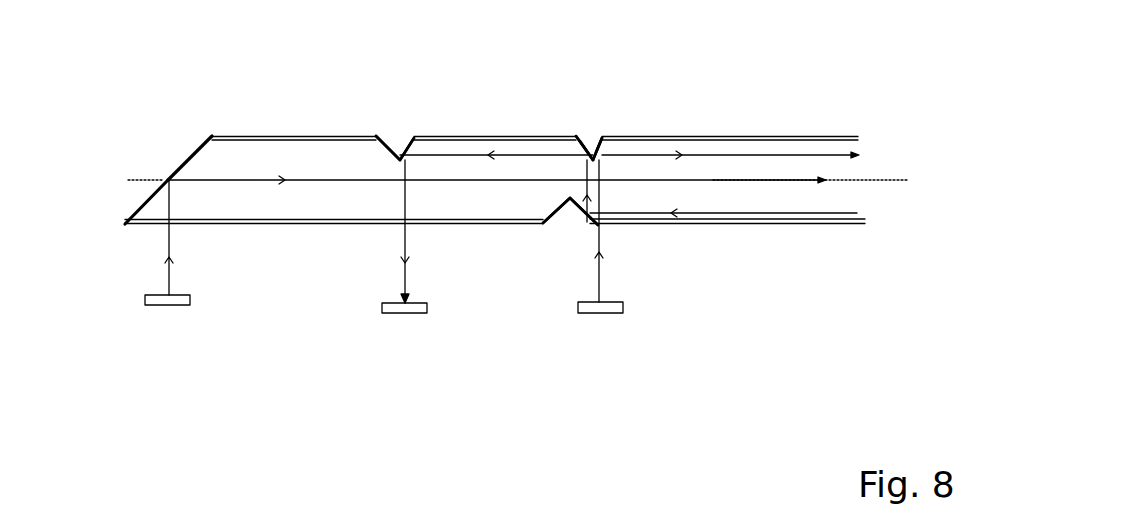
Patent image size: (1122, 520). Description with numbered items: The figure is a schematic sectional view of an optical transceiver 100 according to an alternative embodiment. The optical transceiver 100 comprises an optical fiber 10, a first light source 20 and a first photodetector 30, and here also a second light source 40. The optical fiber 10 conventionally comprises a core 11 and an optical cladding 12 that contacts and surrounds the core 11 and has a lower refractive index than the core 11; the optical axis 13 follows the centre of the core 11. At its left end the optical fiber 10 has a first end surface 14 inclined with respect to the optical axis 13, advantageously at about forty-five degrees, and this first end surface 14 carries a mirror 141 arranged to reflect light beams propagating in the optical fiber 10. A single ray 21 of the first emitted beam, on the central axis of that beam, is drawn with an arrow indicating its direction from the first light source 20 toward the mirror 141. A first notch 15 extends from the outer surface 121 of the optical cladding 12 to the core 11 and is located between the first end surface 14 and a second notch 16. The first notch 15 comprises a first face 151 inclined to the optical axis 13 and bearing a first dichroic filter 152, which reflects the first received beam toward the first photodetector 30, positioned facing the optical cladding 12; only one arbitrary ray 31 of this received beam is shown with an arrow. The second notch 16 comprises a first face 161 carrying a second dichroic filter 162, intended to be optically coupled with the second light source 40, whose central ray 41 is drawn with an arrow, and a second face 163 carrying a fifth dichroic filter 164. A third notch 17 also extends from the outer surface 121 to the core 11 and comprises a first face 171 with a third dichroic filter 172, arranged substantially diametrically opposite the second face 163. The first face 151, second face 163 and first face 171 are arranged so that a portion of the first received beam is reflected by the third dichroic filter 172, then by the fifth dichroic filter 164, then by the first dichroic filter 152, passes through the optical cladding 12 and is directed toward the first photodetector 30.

The optical transceiver 100 is at (96, 91).
The optical fiber 10 is at (845, 113).
The core 11 is at (288, 210).
The optical cladding 12 is at (265, 136).
The outer surface 121 is at (757, 135).
The optical axis 13 is at (878, 183).
The first end surface 14 is at (200, 152).
The mirror 141 is at (132, 212).
The first notch 15 is at (402, 125).
The first face of the first notch 151 is at (412, 147).
The first dichroic filter 152 is at (397, 157).
The second notch 16 is at (594, 118).
The first face of the second notch 161 is at (602, 145).
The second dichroic filter 162 is at (600, 148).
The second face of the second notch 163 is at (582, 147).
The fifth dichroic filter 164 is at (587, 152).
The third notch 17 is at (558, 246).
The first face of the third notch 171 is at (575, 208).
The third dichroic filter 172 is at (588, 223).
The first light source 20 is at (180, 302).
The ray of the first emitted beam 21 is at (170, 279).
The first photodetector 30 is at (408, 310).
The ray of the first received beam 31 is at (408, 285).
The second light source 40 is at (602, 310).
The ray of the second emitted beam 41 is at (602, 275).